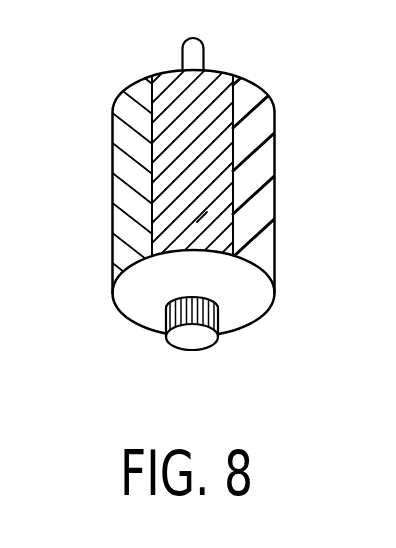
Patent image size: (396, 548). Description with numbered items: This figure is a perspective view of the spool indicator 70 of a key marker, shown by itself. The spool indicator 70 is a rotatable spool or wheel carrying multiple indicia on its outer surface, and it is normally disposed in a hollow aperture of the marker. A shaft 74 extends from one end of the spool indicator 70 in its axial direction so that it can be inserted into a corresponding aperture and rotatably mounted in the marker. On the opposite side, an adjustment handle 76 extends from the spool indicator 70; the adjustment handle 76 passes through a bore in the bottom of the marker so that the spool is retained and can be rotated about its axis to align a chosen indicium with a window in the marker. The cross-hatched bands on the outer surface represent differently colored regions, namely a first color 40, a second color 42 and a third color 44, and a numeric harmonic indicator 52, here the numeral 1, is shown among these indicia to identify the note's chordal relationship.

The spool indicator 70 is at (296, 81).
The shaft 74 is at (183, 52).
The first color 40 is at (150, 101).
The second color 42 is at (118, 183).
The harmonic indicators 52 is at (176, 223).
The numeral 1 is at (196, 227).
The third color 44 is at (254, 152).
The adjustment handle 76 is at (199, 335).